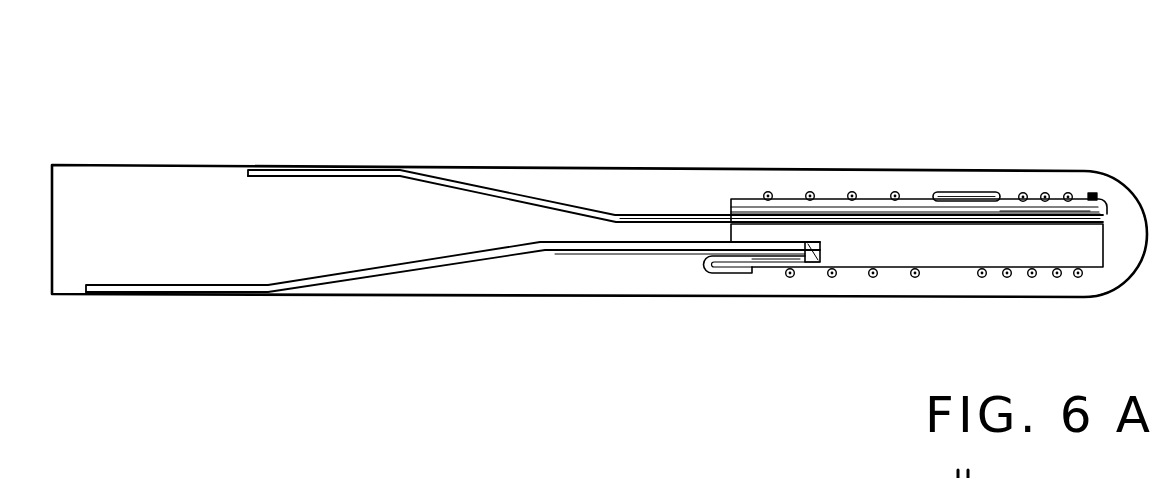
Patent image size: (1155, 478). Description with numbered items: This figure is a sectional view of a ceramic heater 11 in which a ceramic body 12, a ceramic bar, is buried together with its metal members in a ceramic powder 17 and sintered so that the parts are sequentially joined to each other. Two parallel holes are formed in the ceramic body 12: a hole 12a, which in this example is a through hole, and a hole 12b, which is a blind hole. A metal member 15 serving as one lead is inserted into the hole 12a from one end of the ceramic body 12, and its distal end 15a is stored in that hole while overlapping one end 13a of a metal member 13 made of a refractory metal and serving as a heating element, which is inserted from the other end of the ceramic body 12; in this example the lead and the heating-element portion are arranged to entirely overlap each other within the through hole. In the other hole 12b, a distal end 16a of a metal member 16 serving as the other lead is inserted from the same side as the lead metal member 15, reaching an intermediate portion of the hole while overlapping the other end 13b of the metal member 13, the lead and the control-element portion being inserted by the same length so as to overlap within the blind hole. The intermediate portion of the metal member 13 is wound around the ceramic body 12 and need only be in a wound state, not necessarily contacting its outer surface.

The ceramic heater 11 is at (960, 136).
The ceramic body 12 is at (930, 253).
The hole 12a is at (923, 210).
The hole 12b is at (808, 259).
The metal member 13 is at (1047, 193).
The one end of the metal member 13a is at (1010, 211).
The other end of the metal member 13b is at (780, 258).
The metal member 15 is at (646, 215).
The distal end of the metal member 15a is at (868, 220).
The metal member 16 is at (522, 252).
The distal end of the metal member 16a is at (760, 247).
The ceramic powder 17 is at (570, 185).